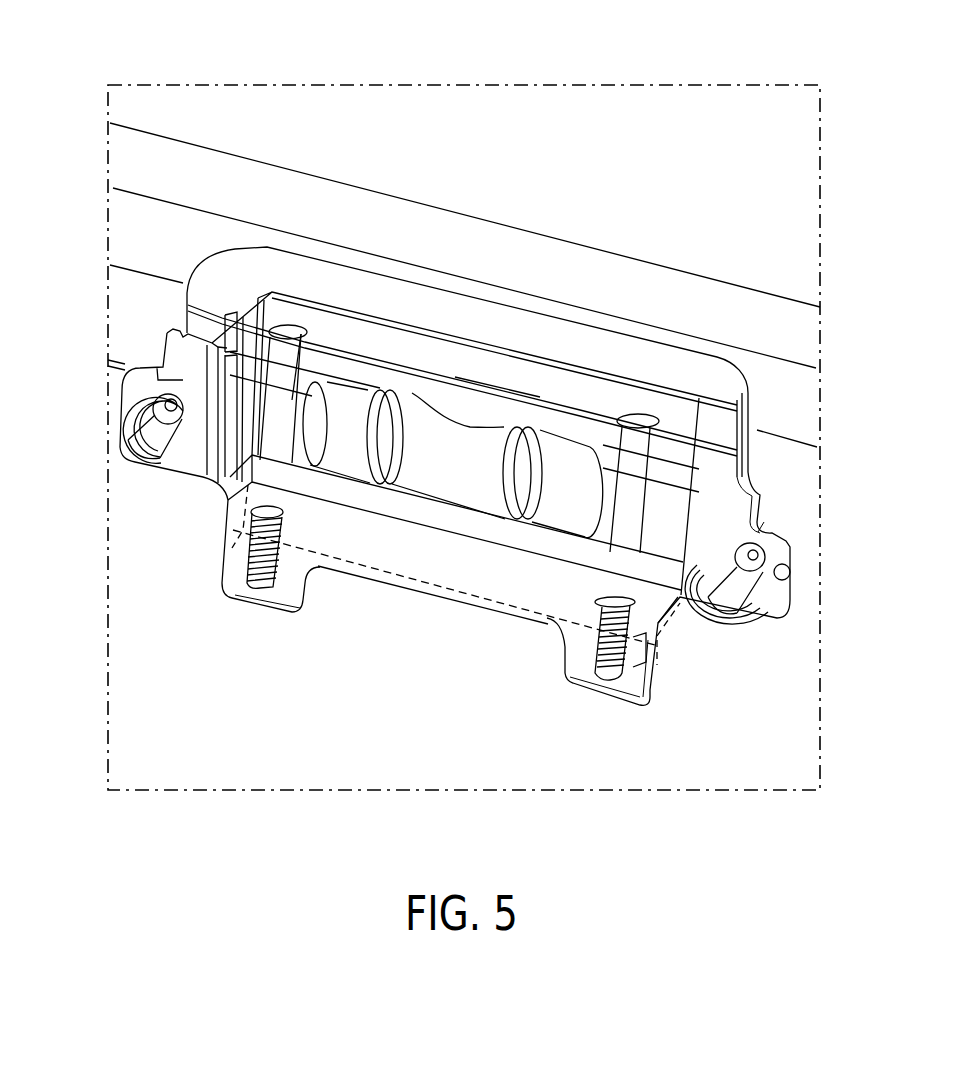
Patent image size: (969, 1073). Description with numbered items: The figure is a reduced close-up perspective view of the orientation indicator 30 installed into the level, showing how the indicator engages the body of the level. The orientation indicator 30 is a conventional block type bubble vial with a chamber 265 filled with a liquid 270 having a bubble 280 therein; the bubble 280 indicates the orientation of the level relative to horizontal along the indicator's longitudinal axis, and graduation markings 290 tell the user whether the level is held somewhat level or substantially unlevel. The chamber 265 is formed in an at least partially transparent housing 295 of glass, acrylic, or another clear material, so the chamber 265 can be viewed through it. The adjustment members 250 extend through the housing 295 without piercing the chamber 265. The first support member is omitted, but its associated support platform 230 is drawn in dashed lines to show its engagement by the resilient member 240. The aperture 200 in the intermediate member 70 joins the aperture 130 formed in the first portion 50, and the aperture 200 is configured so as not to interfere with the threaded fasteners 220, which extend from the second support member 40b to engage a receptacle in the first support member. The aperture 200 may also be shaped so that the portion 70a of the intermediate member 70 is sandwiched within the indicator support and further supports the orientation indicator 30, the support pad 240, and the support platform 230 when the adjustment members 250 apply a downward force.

The orientation indicator 30 is at (495, 386).
The second support member 40b is at (182, 382).
The first portion 50 is at (744, 314).
The intermediate member 70 is at (212, 679).
The portion of the intermediate member 70a is at (430, 610).
The aperture 130 is at (433, 302).
The aperture 200 is at (777, 567).
The threaded fasteners 220 is at (150, 437).
The support platform 230 is at (340, 532).
The resilient member 240 is at (493, 528).
The adjustment members 250 is at (288, 360).
The chamber 265 is at (370, 385).
The liquid 270 is at (476, 474).
The bubble 280 is at (457, 410).
The graduation markings 290 is at (410, 400).
The housing 295 is at (694, 509).